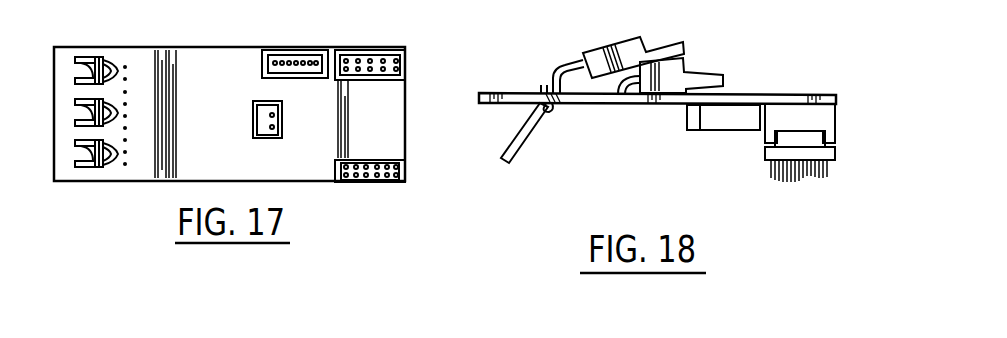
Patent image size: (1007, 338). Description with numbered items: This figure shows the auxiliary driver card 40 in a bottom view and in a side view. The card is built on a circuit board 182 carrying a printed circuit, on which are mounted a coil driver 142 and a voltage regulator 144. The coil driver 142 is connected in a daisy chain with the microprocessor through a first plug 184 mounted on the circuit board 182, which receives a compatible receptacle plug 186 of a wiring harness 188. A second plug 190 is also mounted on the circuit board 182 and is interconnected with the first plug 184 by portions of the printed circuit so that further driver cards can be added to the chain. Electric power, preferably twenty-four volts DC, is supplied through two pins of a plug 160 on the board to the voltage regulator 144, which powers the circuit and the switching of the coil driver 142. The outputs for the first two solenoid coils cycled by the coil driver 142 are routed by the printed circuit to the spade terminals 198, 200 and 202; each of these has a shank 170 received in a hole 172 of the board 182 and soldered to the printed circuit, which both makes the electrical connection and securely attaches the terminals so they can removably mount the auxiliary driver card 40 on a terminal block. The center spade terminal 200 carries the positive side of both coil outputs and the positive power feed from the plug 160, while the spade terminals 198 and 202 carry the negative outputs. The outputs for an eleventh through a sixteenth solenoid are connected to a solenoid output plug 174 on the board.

In FIG. 18, the auxiliary driver card 40 is at (776, 38).
In FIG. 18, the coil driver 142 is at (599, 53).
In FIG. 18, the voltage regulator 144 is at (683, 66).
In FIG. 17, the plug 160 is at (253, 118).
In FIG. 18, the plug 160 is at (687, 121).
In FIG. 18, the shank 170 is at (537, 92).
In FIG. 18, the hole 172 is at (541, 108).
In FIG. 17, the solenoid output plug 174 is at (292, 50).
In FIG. 18, the solenoid output plug 174 is at (712, 132).
In FIG. 17, the circuit board 182 is at (203, 40).
In FIG. 18, the circuit board 182 is at (763, 96).
In FIG. 17, the first plug 184 is at (387, 52).
In FIG. 18, the first plug 184 is at (830, 123).
In FIG. 18, the receptacle plug 186 is at (763, 152).
In FIG. 18, the wiring harness 188 is at (797, 183).
In FIG. 17, the second plug 190 is at (387, 187).
In FIG. 17, the spade terminal 198 is at (98, 168).
In FIG. 17, the spade terminal 200 is at (80, 123).
In FIG. 17, the spade terminal 202 is at (118, 37).
In FIG. 18, the spade terminal 202 is at (523, 133).